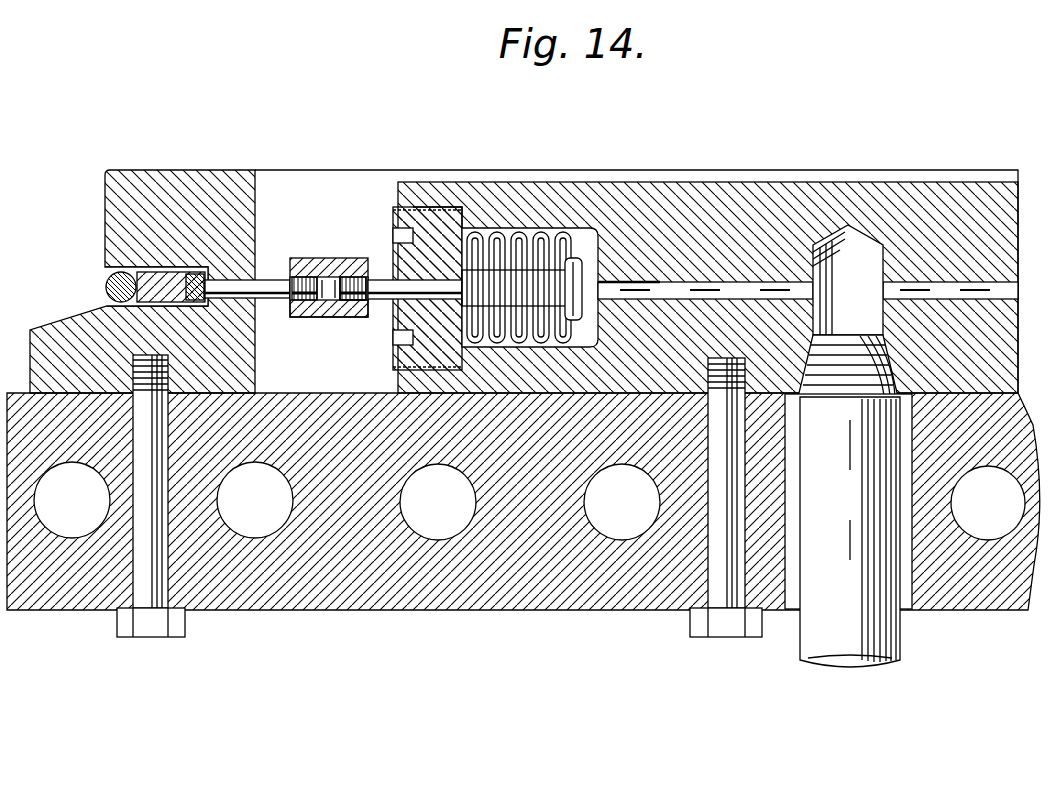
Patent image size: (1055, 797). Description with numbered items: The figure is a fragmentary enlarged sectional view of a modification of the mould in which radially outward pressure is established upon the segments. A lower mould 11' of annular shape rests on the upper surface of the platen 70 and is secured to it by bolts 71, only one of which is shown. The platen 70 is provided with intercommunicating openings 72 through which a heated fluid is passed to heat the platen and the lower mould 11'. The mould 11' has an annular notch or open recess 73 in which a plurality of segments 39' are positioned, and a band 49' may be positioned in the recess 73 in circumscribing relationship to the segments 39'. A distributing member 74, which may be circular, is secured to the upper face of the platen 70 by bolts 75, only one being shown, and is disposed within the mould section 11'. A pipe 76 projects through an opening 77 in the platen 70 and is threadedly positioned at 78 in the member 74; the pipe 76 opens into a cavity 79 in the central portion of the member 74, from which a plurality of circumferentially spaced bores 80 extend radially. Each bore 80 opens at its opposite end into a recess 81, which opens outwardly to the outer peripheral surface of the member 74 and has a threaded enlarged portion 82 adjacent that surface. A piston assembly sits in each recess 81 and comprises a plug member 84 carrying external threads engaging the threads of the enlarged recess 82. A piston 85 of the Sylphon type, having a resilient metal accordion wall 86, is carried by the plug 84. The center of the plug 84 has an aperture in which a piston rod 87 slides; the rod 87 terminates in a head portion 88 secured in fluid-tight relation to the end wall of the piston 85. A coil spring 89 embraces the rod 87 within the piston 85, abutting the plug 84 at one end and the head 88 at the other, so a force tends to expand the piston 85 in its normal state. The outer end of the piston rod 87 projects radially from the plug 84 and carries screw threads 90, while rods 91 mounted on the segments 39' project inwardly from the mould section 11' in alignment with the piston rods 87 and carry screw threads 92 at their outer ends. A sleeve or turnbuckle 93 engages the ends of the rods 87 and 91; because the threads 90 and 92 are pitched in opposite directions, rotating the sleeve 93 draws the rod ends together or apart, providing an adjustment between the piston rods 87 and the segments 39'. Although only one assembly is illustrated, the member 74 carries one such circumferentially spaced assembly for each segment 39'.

The lower mould 11' is at (142, 261).
The segments 39' is at (171, 216).
The annular notch or open recess 73 is at (128, 270).
The band 49' is at (87, 275).
The rods 91 is at (268, 285).
The sleeve or turnbuckle 93 is at (302, 258).
The screw threads 92 is at (305, 312).
The screw threads 90 is at (355, 302).
The accordion wall 86 is at (407, 275).
The plug member 84 is at (394, 212).
The enlarged portion 82 is at (430, 212).
The piston rod 87 is at (466, 230).
The recess 81 is at (483, 235).
The coil spring 89 is at (522, 243).
The piston 85 is at (580, 270).
The head portion 88 is at (637, 282).
The bores 80 is at (655, 287).
The distributing member 74 is at (742, 207).
The cavity 79 is at (862, 248).
The threaded connection 78 is at (888, 345).
The opening 77 is at (793, 565).
The pipe 76 is at (902, 642).
The bolts 75 is at (708, 573).
The intercommunicating openings 72 is at (617, 535).
The platen 70 is at (378, 590).
The bolts 71 is at (170, 572).